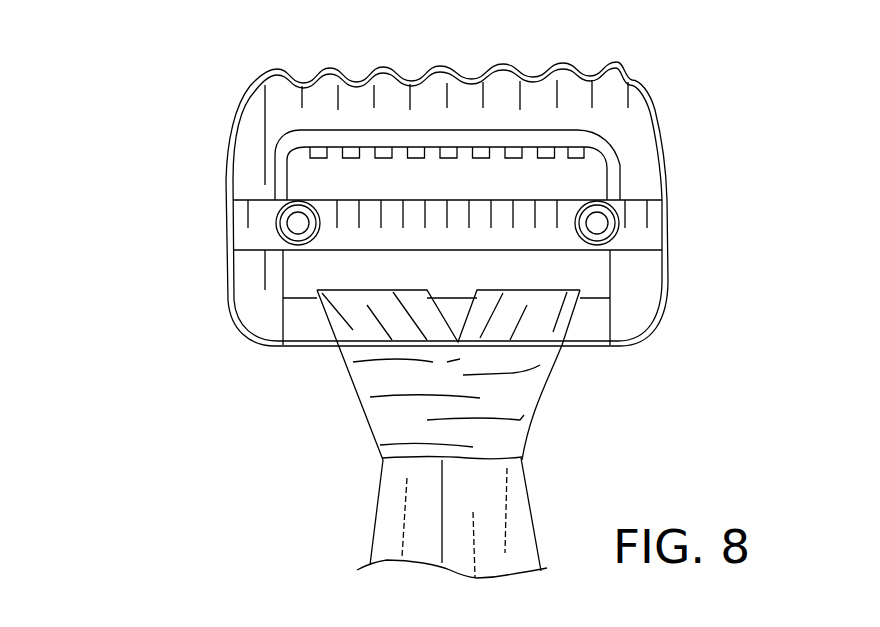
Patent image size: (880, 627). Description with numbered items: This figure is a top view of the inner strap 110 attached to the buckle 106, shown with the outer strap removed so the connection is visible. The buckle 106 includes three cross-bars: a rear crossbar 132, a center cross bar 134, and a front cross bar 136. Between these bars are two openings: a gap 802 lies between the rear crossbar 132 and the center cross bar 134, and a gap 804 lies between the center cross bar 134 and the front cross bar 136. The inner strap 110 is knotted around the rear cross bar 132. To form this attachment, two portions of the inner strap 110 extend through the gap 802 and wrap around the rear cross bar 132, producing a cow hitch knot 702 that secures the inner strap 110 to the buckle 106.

The buckle 106 is at (702, 72).
The front cross bar 136 is at (513, 80).
The gap 804 is at (345, 178).
The center cross bar 134 is at (530, 197).
The gap 802 is at (345, 274).
The rear crossbar 132 is at (580, 297).
The cow hitch knot 702 is at (363, 393).
The inner strap 110 is at (525, 508).